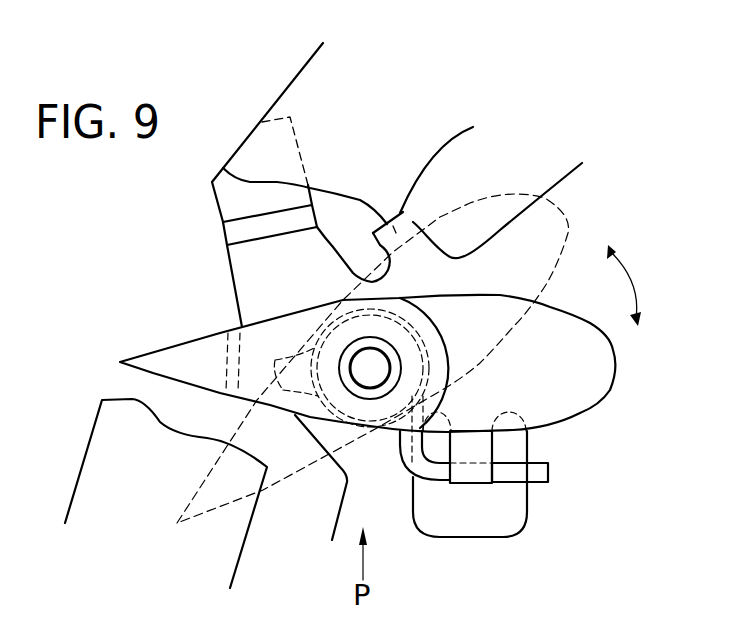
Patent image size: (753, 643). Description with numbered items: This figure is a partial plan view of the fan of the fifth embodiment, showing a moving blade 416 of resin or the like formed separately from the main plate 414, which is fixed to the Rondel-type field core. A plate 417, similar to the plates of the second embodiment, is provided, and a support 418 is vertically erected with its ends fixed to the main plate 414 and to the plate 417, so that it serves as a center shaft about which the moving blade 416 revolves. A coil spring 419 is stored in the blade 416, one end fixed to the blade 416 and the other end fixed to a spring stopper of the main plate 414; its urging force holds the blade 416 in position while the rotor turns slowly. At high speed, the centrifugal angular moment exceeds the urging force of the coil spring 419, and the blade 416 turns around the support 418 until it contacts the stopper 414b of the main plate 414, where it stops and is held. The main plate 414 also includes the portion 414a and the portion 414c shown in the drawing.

The plate 417 is at (312, 80).
The handle band portion 414c is at (228, 232).
The stopper 414b is at (413, 222).
The moving blade 416 is at (600, 372).
The support 418 is at (368, 372).
The main plate 414 is at (520, 517).
The bracket box portion 414a is at (468, 475).
The coil spring 419 is at (548, 470).